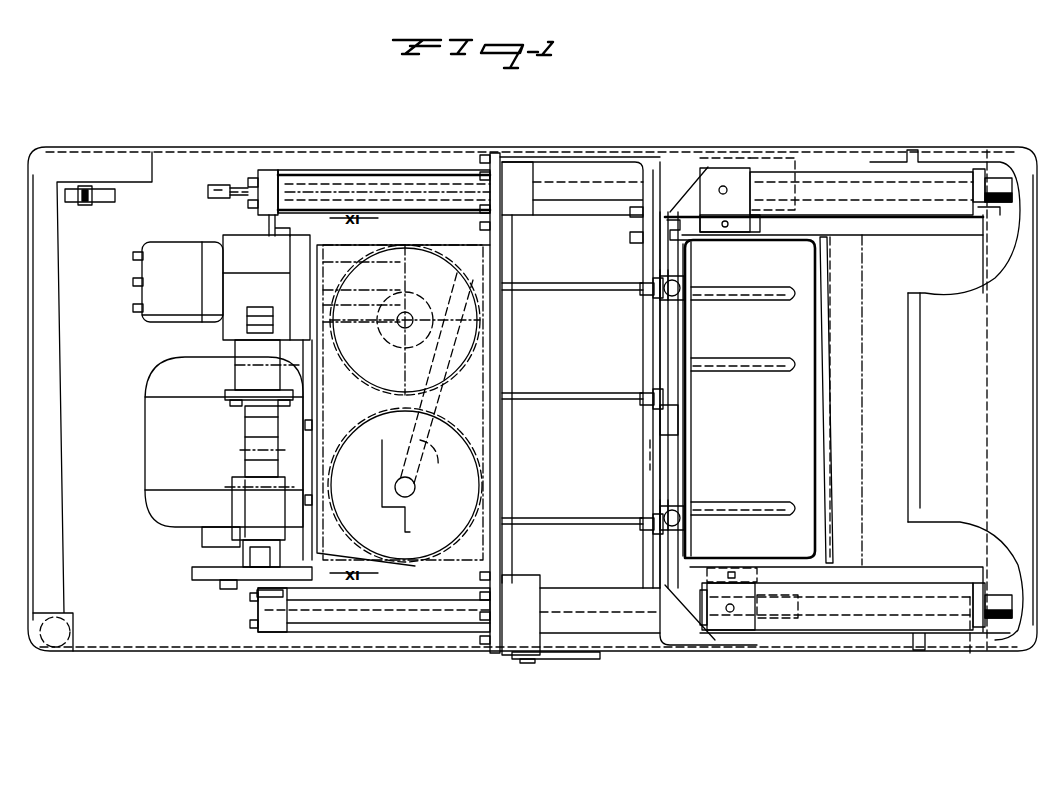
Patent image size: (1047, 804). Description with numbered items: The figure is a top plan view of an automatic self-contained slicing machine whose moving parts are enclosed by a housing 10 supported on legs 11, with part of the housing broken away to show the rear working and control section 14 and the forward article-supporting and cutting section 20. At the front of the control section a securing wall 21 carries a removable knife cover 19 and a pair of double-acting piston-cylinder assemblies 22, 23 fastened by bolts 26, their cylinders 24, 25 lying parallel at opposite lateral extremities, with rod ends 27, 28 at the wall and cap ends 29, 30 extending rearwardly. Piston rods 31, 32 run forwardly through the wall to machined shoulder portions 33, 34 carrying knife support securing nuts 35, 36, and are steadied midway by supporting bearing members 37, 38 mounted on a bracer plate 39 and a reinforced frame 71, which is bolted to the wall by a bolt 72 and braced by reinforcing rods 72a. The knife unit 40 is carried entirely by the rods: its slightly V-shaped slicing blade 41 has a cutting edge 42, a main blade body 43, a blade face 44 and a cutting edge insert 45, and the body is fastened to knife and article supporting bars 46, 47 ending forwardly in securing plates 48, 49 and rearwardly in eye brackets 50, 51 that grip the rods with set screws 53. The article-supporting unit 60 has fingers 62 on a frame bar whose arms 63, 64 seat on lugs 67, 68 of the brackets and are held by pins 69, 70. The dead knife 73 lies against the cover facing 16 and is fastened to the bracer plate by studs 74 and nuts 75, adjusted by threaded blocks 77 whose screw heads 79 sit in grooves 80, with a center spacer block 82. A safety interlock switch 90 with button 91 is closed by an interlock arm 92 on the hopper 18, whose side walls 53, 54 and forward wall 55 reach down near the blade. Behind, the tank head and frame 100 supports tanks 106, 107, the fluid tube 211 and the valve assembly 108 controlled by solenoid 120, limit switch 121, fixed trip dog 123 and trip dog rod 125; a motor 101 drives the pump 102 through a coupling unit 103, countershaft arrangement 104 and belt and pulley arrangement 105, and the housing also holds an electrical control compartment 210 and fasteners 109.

The housing 10 is at (119, 661).
The legs 11 is at (52, 170).
The working and control section 14 is at (162, 636).
The knife cover 19 is at (972, 150).
The article-supporting and cutting section 20 is at (795, 666).
The securing wall 21 is at (495, 225).
The piston-cylinder assembly 22 is at (390, 172).
The piston-cylinder assembly 23 is at (371, 632).
The cylinder 24 is at (343, 178).
The cylinder 25 is at (340, 633).
The bolts 26 is at (476, 174).
The rod end 27 is at (472, 156).
The rod end 28 is at (478, 596).
The cap end 29 is at (266, 170).
The cap end 30 is at (278, 633).
The piston rod 31 is at (576, 172).
The piston rod 32 is at (556, 608).
The machined shoulder portion 33 is at (973, 190).
The machined shoulder portion 34 is at (968, 640).
The knife support securing nut 35 is at (1002, 178).
The knife support securing nut 36 is at (995, 614).
The supporting bearing member 37 is at (772, 165).
The supporting bearing member 38 is at (774, 630).
The bracer plate 39 is at (648, 467).
The knife unit 40 is at (898, 388).
The slicing blade 41 is at (985, 553).
The cutting edge 42 is at (838, 443).
The main blade body 43 is at (938, 545).
The blade face 44 is at (850, 568).
The cutting edge insert 45 is at (855, 265).
The knife and article supporting bar 46 is at (852, 178).
The knife and article supporting bar 47 is at (872, 633).
The securing plate 48 is at (980, 212).
The securing plate 49 is at (985, 585).
The securing eye bracket 50 is at (712, 175).
The securing eye bracket 51 is at (712, 635).
The set screws 53 is at (727, 186).
The lateral side wall 54 is at (782, 562).
The forward wall 55 is at (825, 400).
The article-supporting unit 60 is at (666, 583).
The fingers 62 is at (765, 290).
The arm 63 is at (680, 221).
The arm 64 is at (708, 575).
The lug 67 is at (755, 232).
The lug 68 is at (770, 590).
The pin 69 is at (728, 238).
The pin 70 is at (738, 580).
The reinforced frame 71 is at (626, 155).
The bolt 72 is at (492, 153).
The reinforcing and bracing rods 72a is at (548, 283).
The dead knife 73 is at (690, 350).
The studs 74 is at (648, 262).
The nuts 75 is at (652, 280).
The internally threaded block 77 is at (662, 300).
The cylindrical head 79 is at (682, 286).
The groove 80 is at (690, 276).
The block 82 is at (658, 435).
The safety interlock switch 90 is at (630, 212).
The actuating button 91 is at (630, 238).
The interlock arm 92 is at (730, 215).
The tank head and frame 100 is at (340, 262).
The motor 101 is at (178, 515).
The pump 102 is at (250, 372).
The coupling unit 103 is at (250, 432).
The countershaft arrangement 104 is at (255, 482).
The belt and pulley arrangement 105 is at (200, 575).
The tank 106 is at (403, 330).
The return tank 107 is at (409, 417).
The reversible double acting valve assembly 108 is at (245, 248).
The bolts 109 is at (480, 226).
The solenoid 120 is at (162, 305).
The limit switch 121 is at (97, 203).
The fixed trip dog 123 is at (213, 198).
The trip dog rod 125 is at (240, 200).
The electrical control compartment 210 is at (553, 662).
The fluid tube 211 is at (417, 486).
The cover facing 16 is at (690, 310).
The hopper 18 is at (801, 256).